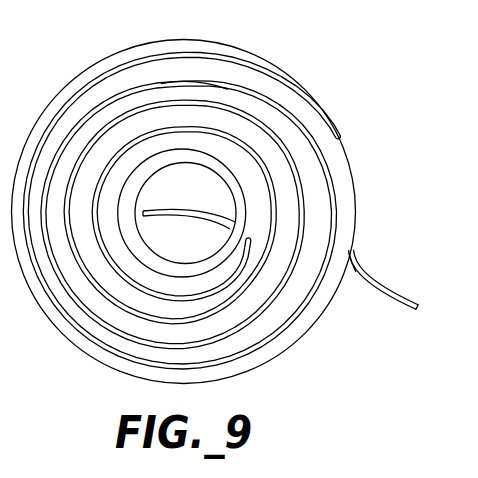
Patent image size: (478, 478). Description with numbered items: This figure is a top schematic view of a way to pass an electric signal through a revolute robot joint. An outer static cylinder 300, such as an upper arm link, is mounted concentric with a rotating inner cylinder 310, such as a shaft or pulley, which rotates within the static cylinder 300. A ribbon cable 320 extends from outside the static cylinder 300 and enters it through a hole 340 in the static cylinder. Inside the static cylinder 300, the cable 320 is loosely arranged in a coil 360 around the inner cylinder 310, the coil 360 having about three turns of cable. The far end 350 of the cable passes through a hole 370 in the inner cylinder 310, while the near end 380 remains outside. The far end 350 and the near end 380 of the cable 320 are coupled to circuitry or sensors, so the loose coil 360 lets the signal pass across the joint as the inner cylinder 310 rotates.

The outer static cylinder 300 is at (288, 72).
The rotating inner cylinder 310 is at (196, 275).
The ribbon cable 320 is at (392, 307).
The hole 340 is at (352, 262).
The far end 350 is at (163, 207).
The coil 360 is at (214, 70).
The hole 370 is at (213, 185).
The near end 380 is at (422, 306).